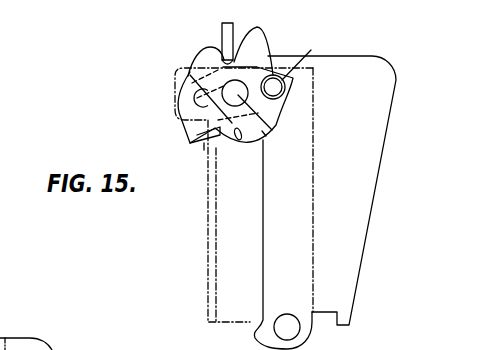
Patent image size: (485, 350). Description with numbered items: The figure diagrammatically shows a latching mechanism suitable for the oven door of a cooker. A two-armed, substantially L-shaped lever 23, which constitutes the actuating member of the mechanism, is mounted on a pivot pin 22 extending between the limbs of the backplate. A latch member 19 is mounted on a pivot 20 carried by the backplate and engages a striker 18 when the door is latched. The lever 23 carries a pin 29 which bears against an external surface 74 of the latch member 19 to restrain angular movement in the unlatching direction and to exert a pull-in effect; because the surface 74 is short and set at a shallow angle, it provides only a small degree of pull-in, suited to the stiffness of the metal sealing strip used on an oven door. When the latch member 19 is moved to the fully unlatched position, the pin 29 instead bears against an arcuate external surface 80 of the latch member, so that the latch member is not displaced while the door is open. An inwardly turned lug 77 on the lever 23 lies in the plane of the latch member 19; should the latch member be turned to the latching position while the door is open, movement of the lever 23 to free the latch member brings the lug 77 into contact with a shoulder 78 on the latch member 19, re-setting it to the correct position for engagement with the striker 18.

The striker 18 is at (222, 40).
The latch member 19 is at (253, 52).
The pivot 20 is at (275, 126).
The pivot pin 22 is at (290, 326).
The lever 23 is at (361, 227).
The pin 29 is at (308, 58).
The external surface 74 is at (280, 100).
The lug 77 is at (203, 144).
The shoulder 78 is at (240, 140).
The arcuate external surface 80 is at (266, 136).